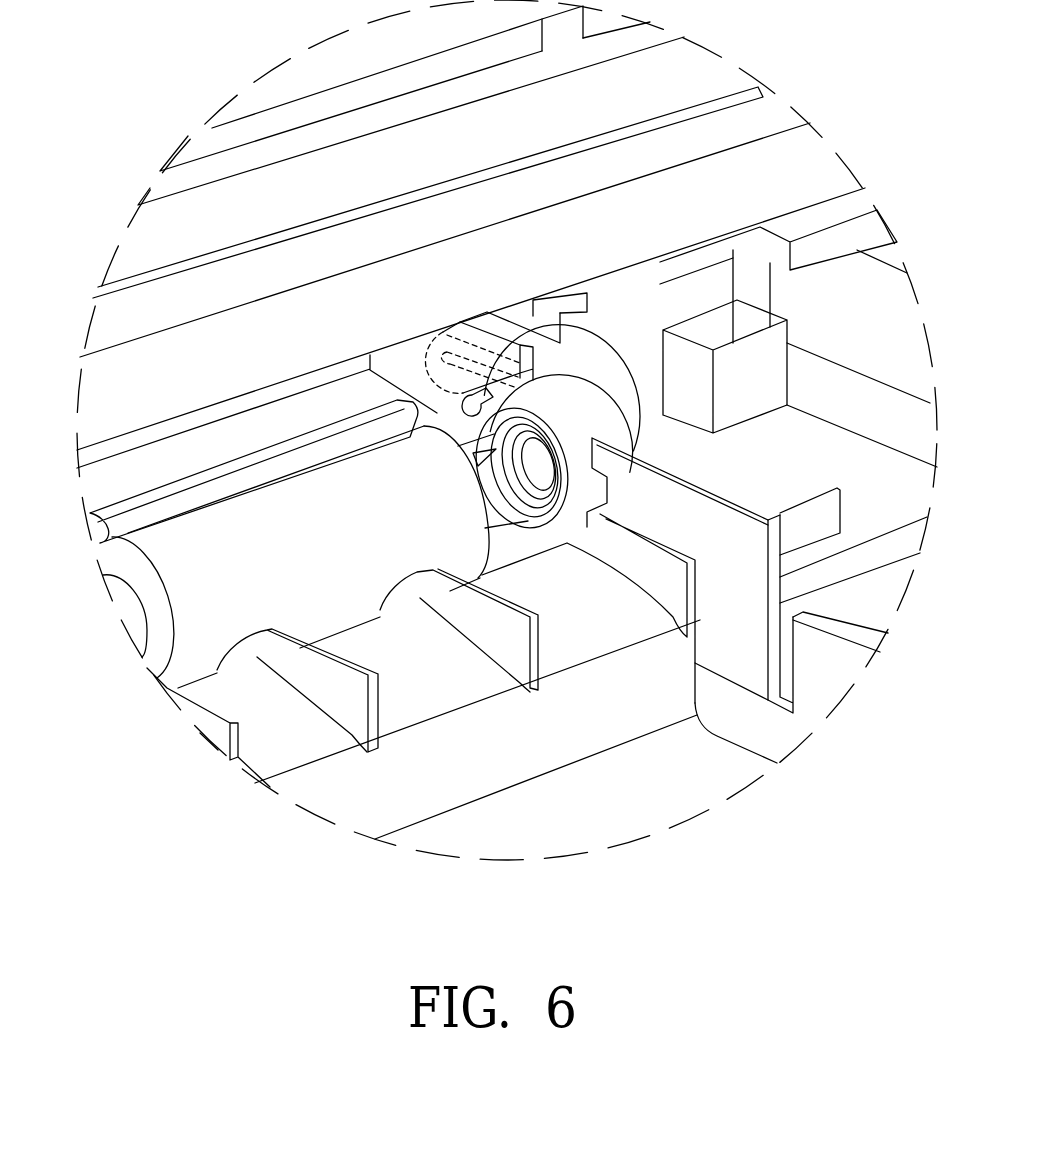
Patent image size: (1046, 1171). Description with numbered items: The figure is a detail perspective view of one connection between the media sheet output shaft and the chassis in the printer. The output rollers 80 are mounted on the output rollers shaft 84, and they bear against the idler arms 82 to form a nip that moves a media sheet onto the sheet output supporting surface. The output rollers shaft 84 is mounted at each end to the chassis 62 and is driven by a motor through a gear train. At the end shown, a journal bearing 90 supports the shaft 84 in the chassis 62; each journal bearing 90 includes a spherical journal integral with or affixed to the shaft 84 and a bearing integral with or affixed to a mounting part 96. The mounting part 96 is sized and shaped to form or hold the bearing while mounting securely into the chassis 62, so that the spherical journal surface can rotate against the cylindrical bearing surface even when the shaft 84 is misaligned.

The chassis 62 is at (680, 469).
The output rollers 80 is at (318, 576).
The idler arms 82 is at (170, 467).
The output rollers shaft 84 is at (500, 508).
The journal bearing 90 is at (477, 458).
The mounting part 96 is at (577, 363).